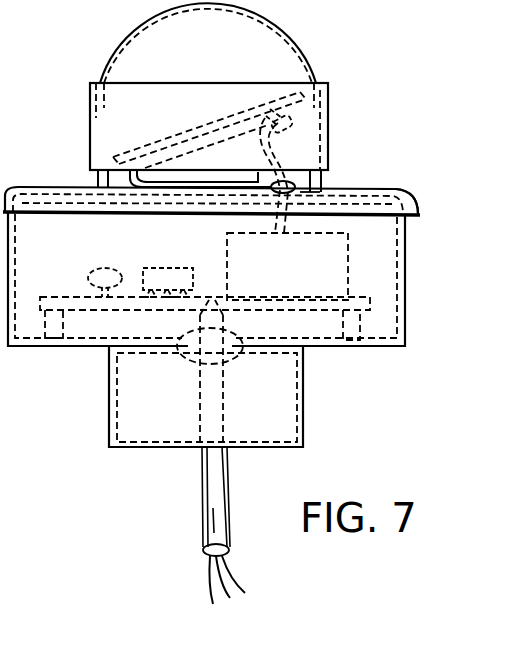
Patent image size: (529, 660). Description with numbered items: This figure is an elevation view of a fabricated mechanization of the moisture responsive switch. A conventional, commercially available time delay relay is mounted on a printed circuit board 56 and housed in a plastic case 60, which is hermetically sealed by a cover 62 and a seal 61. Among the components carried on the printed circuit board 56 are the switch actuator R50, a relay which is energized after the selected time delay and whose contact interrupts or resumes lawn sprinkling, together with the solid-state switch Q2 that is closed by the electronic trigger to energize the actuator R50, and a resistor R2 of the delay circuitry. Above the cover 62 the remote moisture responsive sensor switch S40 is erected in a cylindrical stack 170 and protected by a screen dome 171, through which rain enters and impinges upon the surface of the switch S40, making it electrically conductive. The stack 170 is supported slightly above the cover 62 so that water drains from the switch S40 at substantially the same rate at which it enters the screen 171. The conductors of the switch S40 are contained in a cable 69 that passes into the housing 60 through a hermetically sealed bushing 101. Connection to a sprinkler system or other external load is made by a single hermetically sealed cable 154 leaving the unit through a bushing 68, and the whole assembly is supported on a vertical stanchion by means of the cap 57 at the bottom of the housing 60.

The screen dome 171 is at (302, 50).
The cylindrical stack 170 is at (328, 114).
The moisture responsive sensor switch S40 is at (214, 120).
The cable 69 is at (277, 153).
The hermetically sealed bushing 101 is at (298, 187).
The cover 62 is at (398, 189).
The seal 61 is at (73, 202).
The housing 60 is at (405, 285).
The printed circuit board 56 is at (77, 298).
The resistor R2 is at (105, 276).
The solid-state switch Q2 is at (146, 270).
The switch actuator R50 is at (287, 266).
The hermetically sealed cable 154 is at (197, 375).
The bushing 68 is at (226, 364).
The cap 57 is at (303, 396).